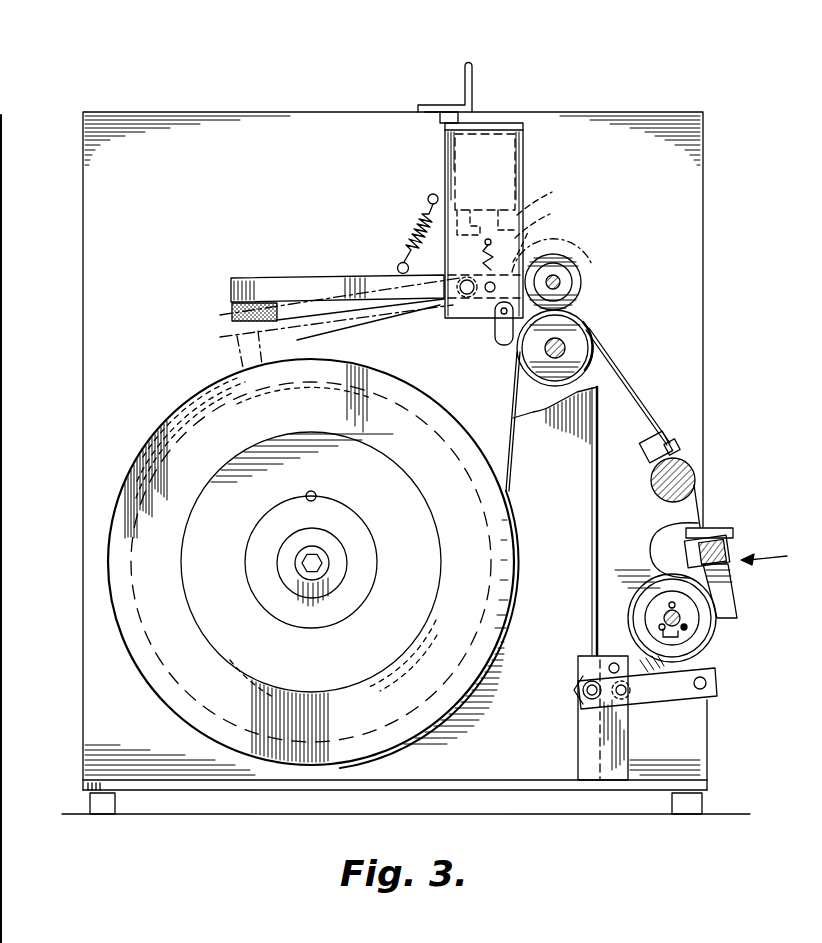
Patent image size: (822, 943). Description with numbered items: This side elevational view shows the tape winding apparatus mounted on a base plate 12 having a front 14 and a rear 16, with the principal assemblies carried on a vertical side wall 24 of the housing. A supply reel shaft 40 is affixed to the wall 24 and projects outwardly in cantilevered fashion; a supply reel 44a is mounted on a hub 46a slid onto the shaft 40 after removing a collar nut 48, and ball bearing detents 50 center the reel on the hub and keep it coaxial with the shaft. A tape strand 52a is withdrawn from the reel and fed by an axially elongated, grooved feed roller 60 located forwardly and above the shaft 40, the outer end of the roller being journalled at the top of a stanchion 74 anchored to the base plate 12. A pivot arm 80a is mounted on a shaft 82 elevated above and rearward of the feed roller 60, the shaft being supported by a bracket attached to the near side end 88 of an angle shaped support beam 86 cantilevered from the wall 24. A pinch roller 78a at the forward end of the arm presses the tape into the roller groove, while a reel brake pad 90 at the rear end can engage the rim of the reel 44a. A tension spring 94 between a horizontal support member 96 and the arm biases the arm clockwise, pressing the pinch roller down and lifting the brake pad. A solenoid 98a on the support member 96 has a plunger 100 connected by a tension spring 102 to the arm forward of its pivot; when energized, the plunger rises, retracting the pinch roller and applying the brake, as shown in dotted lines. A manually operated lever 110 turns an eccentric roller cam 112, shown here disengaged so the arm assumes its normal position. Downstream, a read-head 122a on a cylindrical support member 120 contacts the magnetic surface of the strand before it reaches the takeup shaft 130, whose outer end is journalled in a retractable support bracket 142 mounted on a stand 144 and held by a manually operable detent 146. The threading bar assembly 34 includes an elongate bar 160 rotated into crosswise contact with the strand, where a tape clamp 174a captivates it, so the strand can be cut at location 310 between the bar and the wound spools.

The base plate 12 is at (440, 780).
The front 14 is at (710, 783).
The rear 16 is at (90, 790).
The vertical side wall 24 is at (203, 226).
The threading bar assembly 34 is at (778, 556).
The shaft 40 is at (223, 477).
The supply reel 44a is at (175, 708).
The hub 46a is at (253, 553).
The collar nut 48 is at (298, 583).
The ball bearing detents 50 is at (316, 494).
The tape strand 52a is at (636, 396).
The feed roller 60 is at (578, 350).
The stanchion 74 is at (532, 443).
The pinch roller 78a is at (582, 300).
The pivot arm 80a is at (318, 285).
The shaft 82 is at (462, 296).
The angle shaped support beam 86 is at (478, 78).
The near side end 88 is at (430, 118).
The reel brake pad 90 is at (243, 307).
The tension spring 94 is at (412, 228).
The horizontal support member 96 is at (442, 158).
The solenoid 98a is at (552, 222).
The solenoid plunger 100 is at (583, 203).
The tension spring 102 is at (534, 237).
The manually operated lever 110 is at (497, 345).
The eccentric roller cam 112 is at (492, 330).
The support member 120 is at (655, 492).
The read-head 122a is at (648, 450).
The takeup shaft 130 is at (688, 625).
The retractable support bracket 142 is at (700, 695).
The stand 144 is at (620, 755).
The manually operable detent 146 is at (580, 680).
The elongate bar 160 is at (732, 556).
The tape clamp 174a is at (738, 532).
The cutting location 310 is at (726, 582).